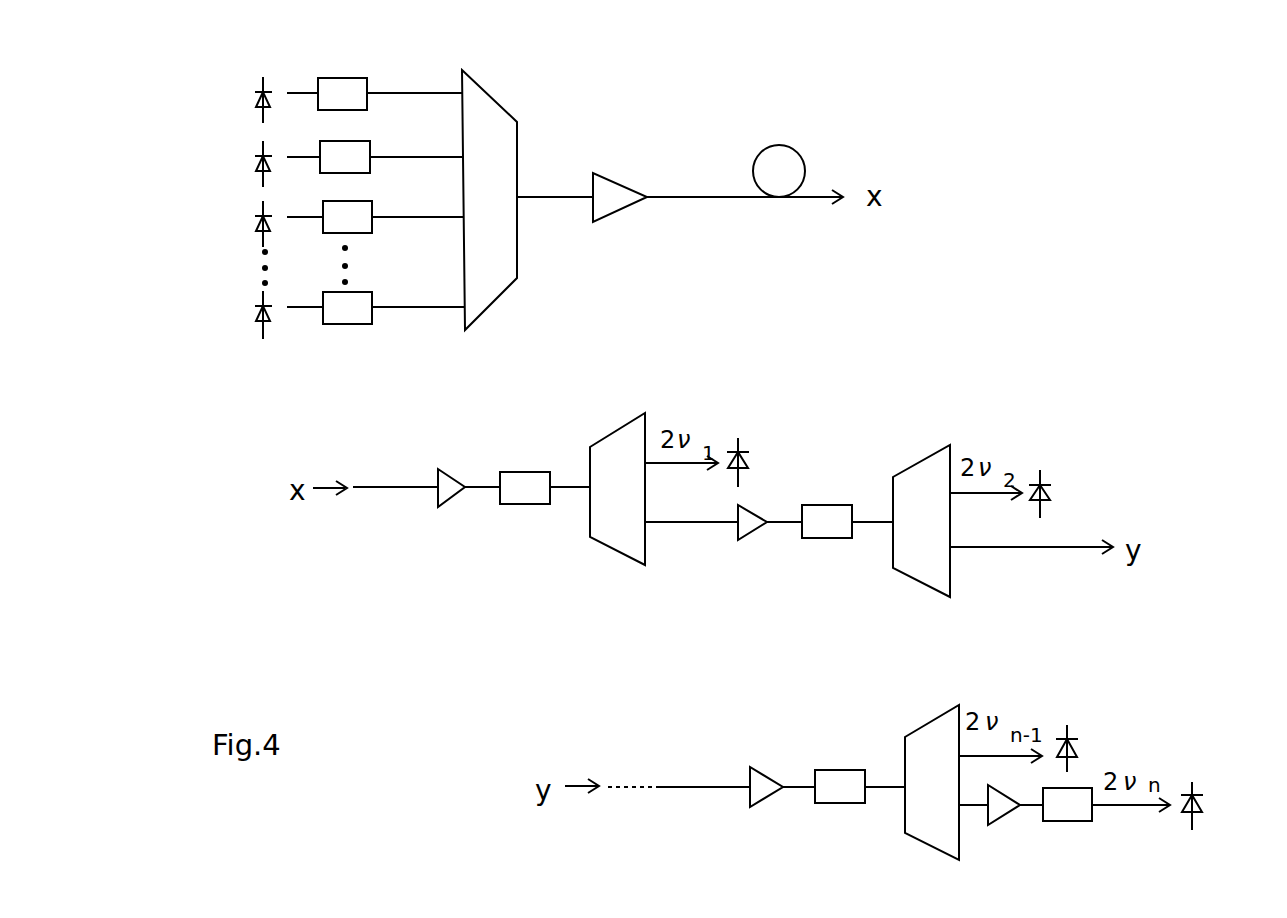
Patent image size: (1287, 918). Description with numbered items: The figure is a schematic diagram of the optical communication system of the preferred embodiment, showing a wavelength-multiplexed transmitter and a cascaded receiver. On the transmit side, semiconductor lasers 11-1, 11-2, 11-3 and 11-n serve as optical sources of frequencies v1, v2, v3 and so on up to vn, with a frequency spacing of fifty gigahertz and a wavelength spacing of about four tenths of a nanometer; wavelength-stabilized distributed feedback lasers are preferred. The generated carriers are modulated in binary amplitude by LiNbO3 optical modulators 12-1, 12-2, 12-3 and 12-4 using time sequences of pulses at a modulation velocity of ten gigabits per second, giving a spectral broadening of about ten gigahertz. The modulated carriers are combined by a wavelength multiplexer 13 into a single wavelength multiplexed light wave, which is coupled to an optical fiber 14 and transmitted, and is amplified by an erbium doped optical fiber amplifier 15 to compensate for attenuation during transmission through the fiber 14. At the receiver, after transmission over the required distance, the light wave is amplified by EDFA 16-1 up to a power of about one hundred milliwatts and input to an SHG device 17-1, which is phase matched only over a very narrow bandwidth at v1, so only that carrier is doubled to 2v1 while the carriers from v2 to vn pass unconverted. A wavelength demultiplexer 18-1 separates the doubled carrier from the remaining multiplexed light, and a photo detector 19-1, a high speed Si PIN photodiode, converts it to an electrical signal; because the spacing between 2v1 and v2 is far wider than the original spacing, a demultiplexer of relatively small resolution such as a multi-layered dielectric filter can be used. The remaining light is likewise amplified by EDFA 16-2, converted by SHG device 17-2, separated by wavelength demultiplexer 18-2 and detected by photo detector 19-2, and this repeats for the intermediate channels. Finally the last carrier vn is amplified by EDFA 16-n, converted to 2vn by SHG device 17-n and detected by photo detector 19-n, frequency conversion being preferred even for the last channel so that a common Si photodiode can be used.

The semiconductor laser 11-1 is at (252, 101).
The semiconductor laser 11-2 is at (252, 164).
The semiconductor laser 11-3 is at (252, 224).
The semiconductor laser 11-n is at (252, 312).
The optical modulator 12-1 is at (347, 93).
The optical modulator 12-2 is at (350, 158).
The optical modulator 12-3 is at (355, 222).
The optical modulator 12-4 is at (353, 313).
The wavelength multiplexer 13 is at (474, 102).
The optical fiber transmission line 14 is at (793, 138).
The erbium doped optical fiber amplifier 15 is at (612, 190).
The EDFA 16-1 is at (447, 470).
The EDFA 16-2 is at (742, 537).
The EDFA 16-n is at (1003, 822).
The SHG device 17-1 is at (522, 483).
The SHG device 17-2 is at (830, 530).
The SHG device 17-n is at (1075, 810).
The wavelength demultiplexer 18-1 is at (612, 455).
The wavelength demultiplexer 18-2 is at (918, 483).
The photo detector 19-1 is at (750, 440).
The photo detector 19-2 is at (1050, 463).
The photo detector 19-n is at (1228, 765).